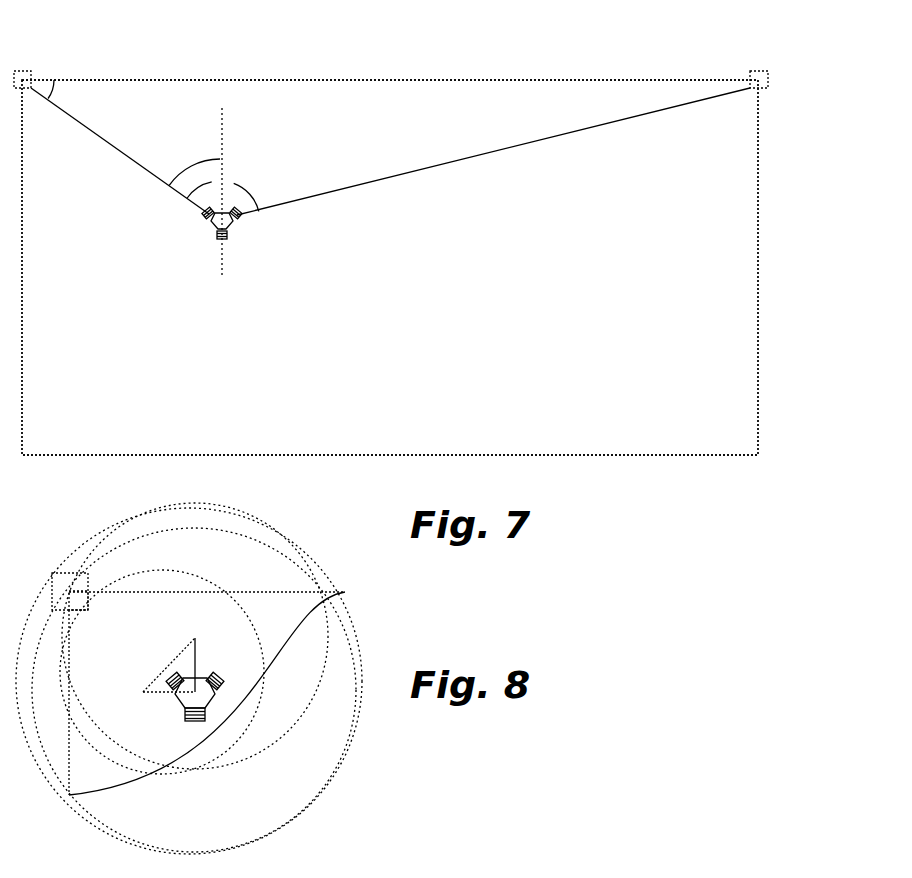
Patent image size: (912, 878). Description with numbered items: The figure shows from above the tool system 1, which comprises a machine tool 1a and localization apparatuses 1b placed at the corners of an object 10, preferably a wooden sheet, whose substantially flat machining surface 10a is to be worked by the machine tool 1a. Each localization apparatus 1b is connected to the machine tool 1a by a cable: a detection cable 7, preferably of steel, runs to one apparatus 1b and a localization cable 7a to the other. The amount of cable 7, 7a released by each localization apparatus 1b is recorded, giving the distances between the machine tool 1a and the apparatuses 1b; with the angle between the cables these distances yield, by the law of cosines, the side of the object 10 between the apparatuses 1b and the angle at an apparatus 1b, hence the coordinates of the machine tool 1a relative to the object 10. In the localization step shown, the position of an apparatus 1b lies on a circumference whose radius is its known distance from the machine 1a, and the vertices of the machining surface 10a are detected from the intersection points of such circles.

In FIG. 7, the tool system 1 is at (732, 491).
In FIG. 8, the tool system 1 is at (400, 767).
In FIG. 7, the machine tool 1a is at (232, 233).
In FIG. 8, the machine tool 1a is at (217, 680).
In FIG. 7, the localization apparatus 1b is at (31, 70).
In FIG. 8, the localization apparatus 1b is at (72, 573).
In FIG. 7, the detection cable 7 is at (175, 191).
In FIG. 8, the detection cable 7 is at (345, 862).
In FIG. 7, the localization cable 7a is at (392, 177).
In FIG. 8, the localization cable 7a is at (588, 862).
In FIG. 7, the object 10 is at (545, 297).
In FIG. 7, the machining surface 10a is at (602, 297).
In FIG. 8, the machining surface 10a is at (142, 655).